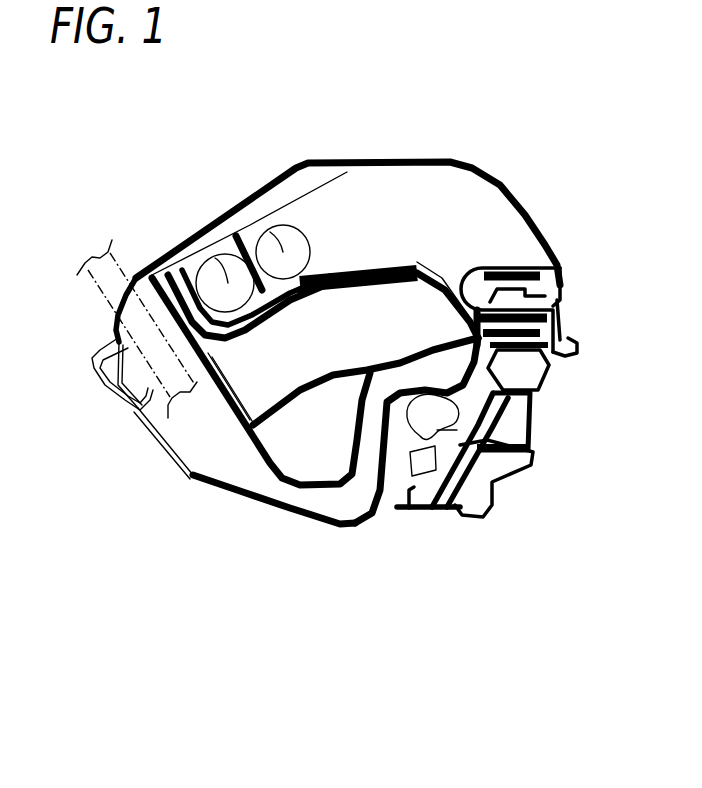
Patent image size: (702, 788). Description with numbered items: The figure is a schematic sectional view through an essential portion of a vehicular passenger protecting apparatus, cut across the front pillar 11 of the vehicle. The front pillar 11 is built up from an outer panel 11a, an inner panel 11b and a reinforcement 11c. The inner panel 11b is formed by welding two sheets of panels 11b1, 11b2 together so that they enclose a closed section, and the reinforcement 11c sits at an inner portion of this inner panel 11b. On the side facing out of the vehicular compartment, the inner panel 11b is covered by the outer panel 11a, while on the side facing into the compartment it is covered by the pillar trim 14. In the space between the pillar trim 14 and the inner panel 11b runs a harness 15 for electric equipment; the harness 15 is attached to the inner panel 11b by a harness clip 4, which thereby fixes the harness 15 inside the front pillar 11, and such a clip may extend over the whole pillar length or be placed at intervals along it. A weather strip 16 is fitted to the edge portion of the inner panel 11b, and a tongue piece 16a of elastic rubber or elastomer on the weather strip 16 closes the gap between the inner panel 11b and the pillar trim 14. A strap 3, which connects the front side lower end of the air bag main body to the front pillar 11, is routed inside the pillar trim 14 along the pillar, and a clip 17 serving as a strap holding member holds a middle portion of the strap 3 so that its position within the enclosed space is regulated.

The strap 3 is at (563, 268).
The harness clip 4 is at (258, 318).
The front pillar 11 is at (130, 444).
The outer panel 11a is at (187, 473).
The inner panel 11b is at (357, 492).
The panel sheet 11b1 is at (433, 272).
The panel sheet 11b2 is at (340, 512).
The reinforcement 11c is at (308, 300).
The pillar trim 14 is at (517, 203).
The harness 15 is at (278, 250).
The weather strip 16 is at (547, 367).
The tongue piece 16a is at (563, 290).
The clip 17 is at (480, 268).